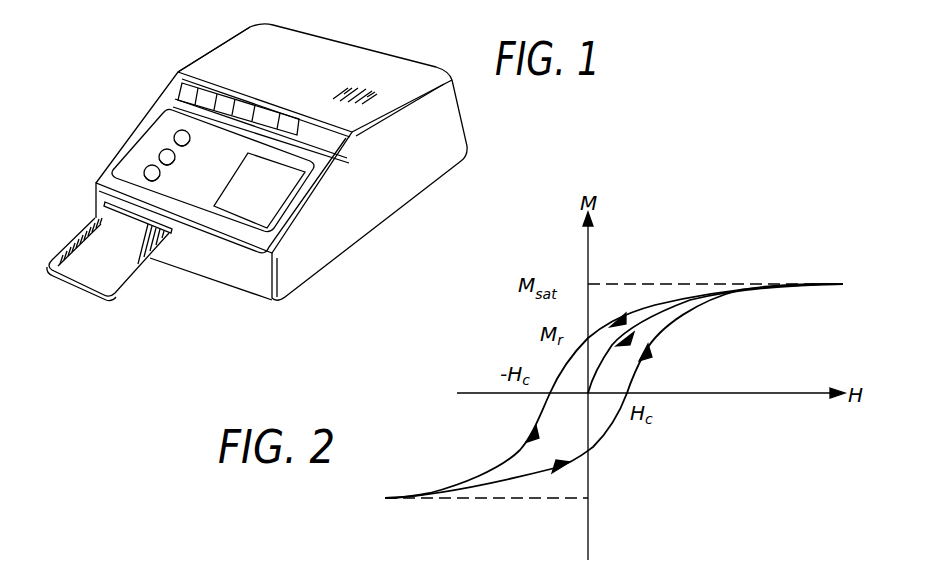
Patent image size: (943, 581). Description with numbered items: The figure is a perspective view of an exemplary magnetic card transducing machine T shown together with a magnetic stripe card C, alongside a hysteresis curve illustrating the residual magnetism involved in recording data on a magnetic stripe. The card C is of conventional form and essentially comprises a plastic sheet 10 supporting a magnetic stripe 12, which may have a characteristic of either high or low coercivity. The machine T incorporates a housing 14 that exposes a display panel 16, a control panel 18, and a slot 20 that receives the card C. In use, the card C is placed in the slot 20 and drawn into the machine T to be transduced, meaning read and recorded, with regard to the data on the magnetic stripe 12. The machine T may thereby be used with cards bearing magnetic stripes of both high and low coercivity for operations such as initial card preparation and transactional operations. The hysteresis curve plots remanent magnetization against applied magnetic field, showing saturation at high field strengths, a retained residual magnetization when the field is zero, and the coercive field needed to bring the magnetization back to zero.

The plastic sheet 10 is at (128, 273).
The magnetic stripe 12 is at (80, 239).
The housing 14 is at (330, 44).
The display panel 16 is at (298, 127).
The control panel 18 is at (282, 190).
The slot 20 is at (172, 230).
The magnetic card transducing machine T is at (222, 47).
The magnetic stripe card C is at (96, 277).